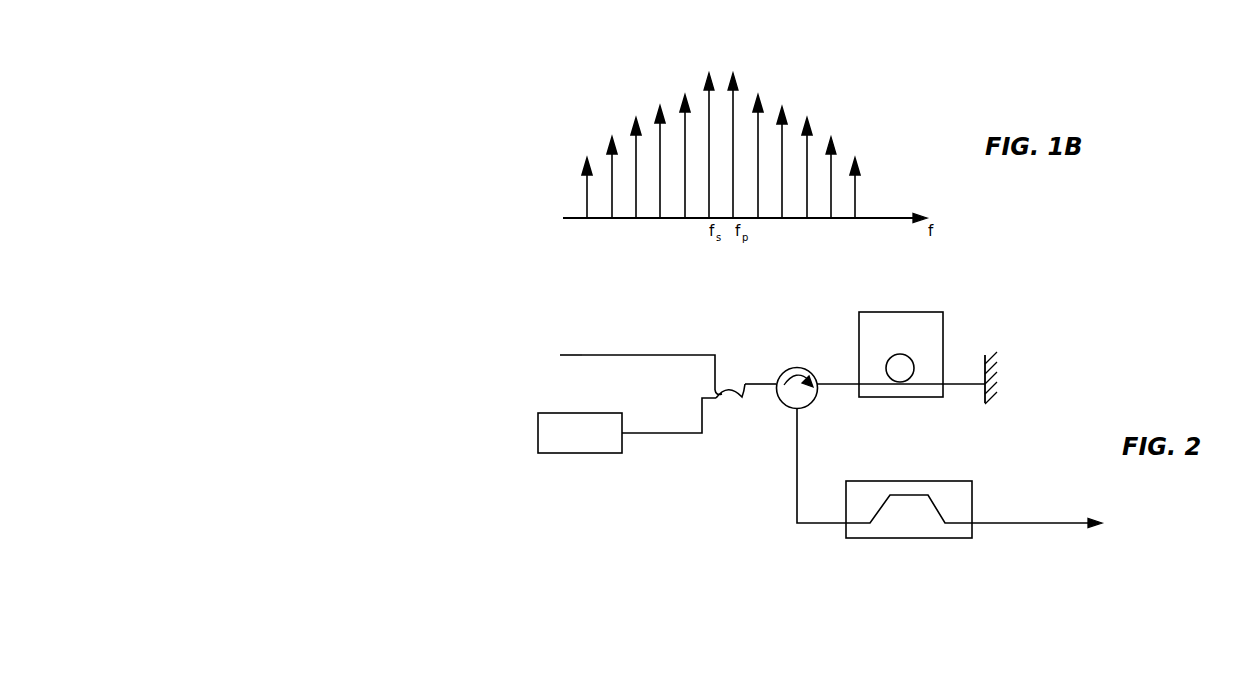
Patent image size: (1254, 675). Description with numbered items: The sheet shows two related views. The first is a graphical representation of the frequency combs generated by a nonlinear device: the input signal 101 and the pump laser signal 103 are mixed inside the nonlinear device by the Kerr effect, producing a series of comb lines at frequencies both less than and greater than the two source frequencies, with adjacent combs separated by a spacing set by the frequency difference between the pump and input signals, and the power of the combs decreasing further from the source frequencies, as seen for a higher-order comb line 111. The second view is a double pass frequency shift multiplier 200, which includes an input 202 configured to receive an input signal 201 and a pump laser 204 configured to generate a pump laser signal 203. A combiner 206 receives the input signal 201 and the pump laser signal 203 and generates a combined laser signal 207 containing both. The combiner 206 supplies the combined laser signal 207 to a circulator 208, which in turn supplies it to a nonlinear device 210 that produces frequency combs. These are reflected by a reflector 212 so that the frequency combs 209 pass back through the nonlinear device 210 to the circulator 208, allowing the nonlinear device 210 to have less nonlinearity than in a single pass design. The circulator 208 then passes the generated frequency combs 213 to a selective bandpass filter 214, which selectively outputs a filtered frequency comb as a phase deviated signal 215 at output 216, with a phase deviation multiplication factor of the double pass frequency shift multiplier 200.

In FIG. 1B, the input signal 101 is at (709, 72).
In FIG. 1B, the pump laser signal 103 is at (735, 73).
In FIG. 1B, the generated comb line 111 is at (830, 140).
In FIG. 2, the double pass frequency shift multiplier 200 is at (484, 304).
In FIG. 2, the input signal 201 is at (630, 355).
In FIG. 2, the input 202 is at (560, 354).
In FIG. 2, the pump laser signal 203 is at (630, 432).
In FIG. 2, the pump laser 204 is at (587, 412).
In FIG. 2, the combiner 206 is at (727, 389).
In FIG. 2, the combined laser signal 207 is at (755, 382).
In FIG. 2, the circulator 208 is at (797, 367).
In FIG. 2, the frequency combs 209 is at (833, 386).
In FIG. 2, the nonlinear device 210 is at (862, 323).
In FIG. 2, the reflector 212 is at (982, 403).
In FIG. 2, the frequency combs 213 is at (795, 445).
In FIG. 2, the selective bandpass filter 214 is at (858, 485).
In FIG. 2, the phase deviated signal 215 is at (1017, 522).
In FIG. 2, the output 216 is at (1093, 521).